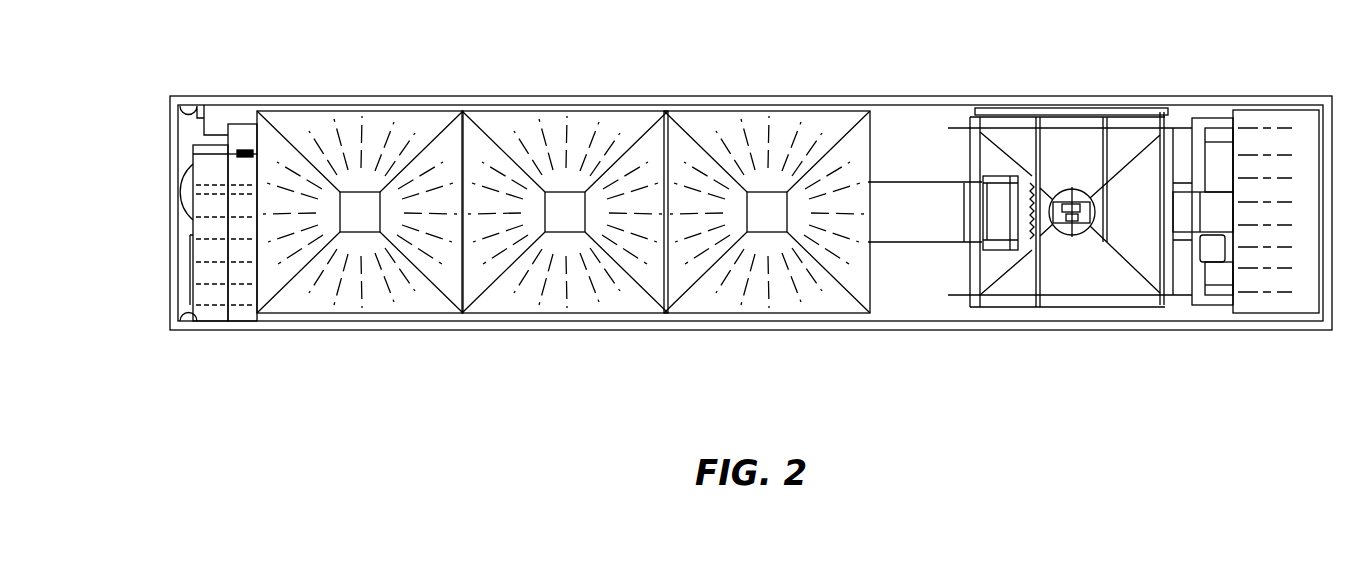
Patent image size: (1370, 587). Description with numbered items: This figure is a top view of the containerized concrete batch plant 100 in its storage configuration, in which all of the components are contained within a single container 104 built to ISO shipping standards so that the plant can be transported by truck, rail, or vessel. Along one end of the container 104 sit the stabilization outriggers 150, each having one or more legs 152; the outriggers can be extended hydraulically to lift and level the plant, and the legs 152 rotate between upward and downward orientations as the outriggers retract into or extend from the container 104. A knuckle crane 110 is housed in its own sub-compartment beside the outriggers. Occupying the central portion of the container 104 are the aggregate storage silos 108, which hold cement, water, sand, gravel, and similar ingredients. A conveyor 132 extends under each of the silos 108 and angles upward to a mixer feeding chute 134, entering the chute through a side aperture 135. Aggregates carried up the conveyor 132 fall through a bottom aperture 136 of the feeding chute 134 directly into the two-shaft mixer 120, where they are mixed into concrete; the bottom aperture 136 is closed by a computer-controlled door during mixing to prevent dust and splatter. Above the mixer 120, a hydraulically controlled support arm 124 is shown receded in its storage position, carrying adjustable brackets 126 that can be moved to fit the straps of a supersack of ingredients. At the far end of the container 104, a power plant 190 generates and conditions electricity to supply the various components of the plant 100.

The containerized concrete batch plant 100 is at (346, 30).
The container 104 is at (313, 322).
The aggregate storage silos 108 is at (442, 305).
The knuckle crane 110 is at (203, 227).
The two-shaft mixer 120 is at (1152, 162).
The hydraulically controlled support arm 124 is at (1112, 113).
The adjustable brackets 126 is at (1108, 138).
The conveyor 132 is at (882, 218).
The mixer feeding chute 134 is at (1025, 170).
The side aperture 135 is at (960, 214).
The bottom aperture 136 is at (1027, 218).
The stabilization outriggers 150 is at (185, 144).
The legs 152 is at (183, 115).
The power plant 190 is at (1280, 125).